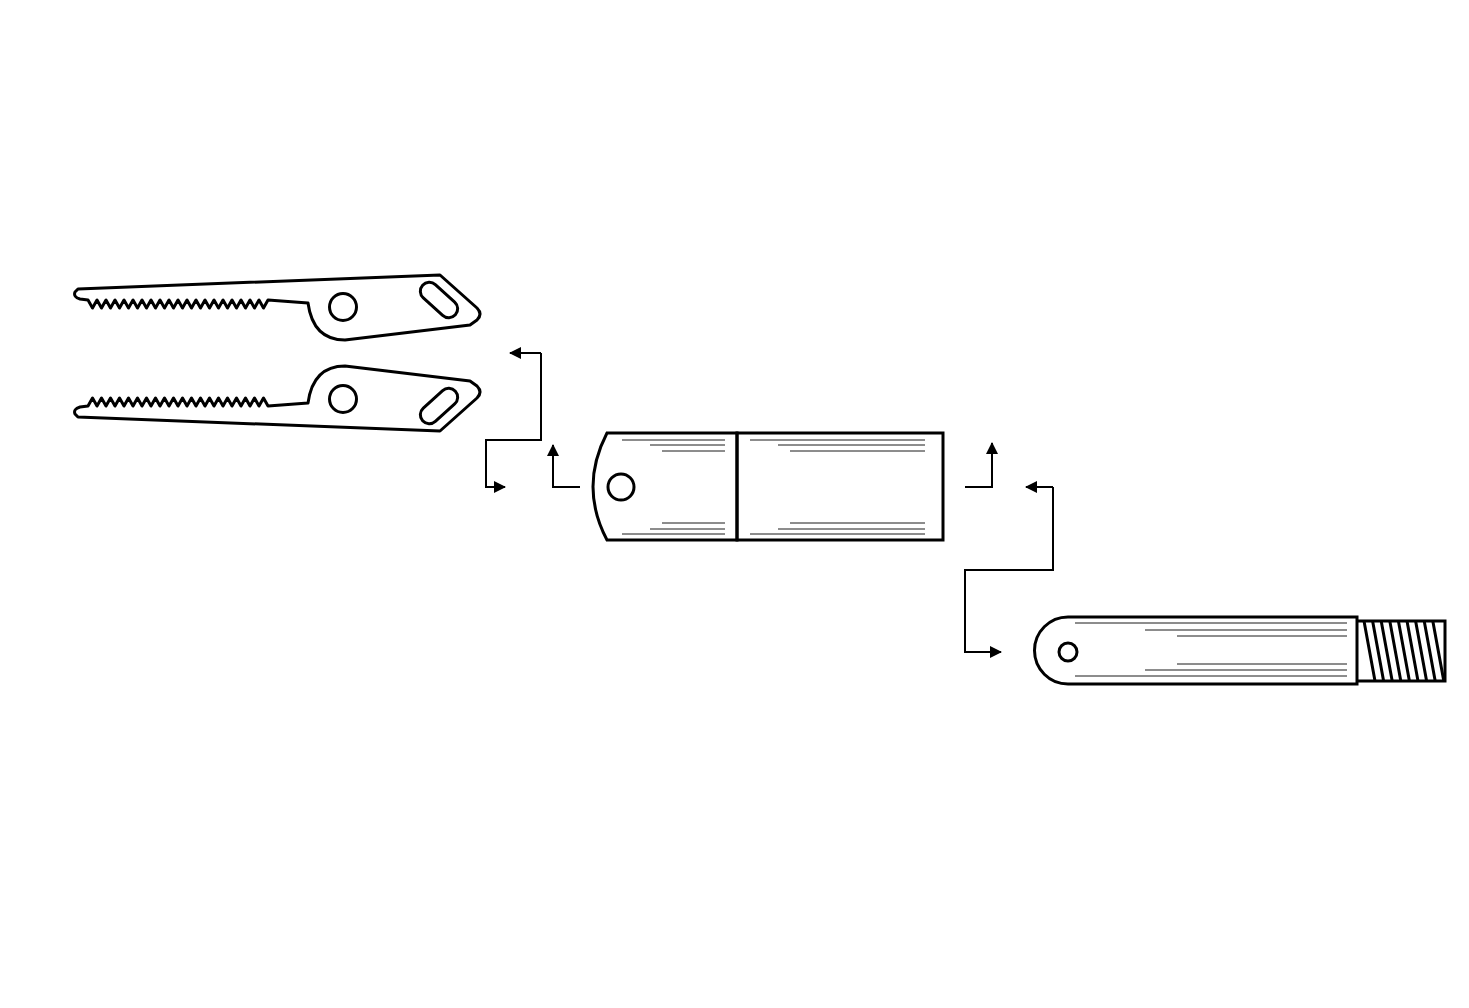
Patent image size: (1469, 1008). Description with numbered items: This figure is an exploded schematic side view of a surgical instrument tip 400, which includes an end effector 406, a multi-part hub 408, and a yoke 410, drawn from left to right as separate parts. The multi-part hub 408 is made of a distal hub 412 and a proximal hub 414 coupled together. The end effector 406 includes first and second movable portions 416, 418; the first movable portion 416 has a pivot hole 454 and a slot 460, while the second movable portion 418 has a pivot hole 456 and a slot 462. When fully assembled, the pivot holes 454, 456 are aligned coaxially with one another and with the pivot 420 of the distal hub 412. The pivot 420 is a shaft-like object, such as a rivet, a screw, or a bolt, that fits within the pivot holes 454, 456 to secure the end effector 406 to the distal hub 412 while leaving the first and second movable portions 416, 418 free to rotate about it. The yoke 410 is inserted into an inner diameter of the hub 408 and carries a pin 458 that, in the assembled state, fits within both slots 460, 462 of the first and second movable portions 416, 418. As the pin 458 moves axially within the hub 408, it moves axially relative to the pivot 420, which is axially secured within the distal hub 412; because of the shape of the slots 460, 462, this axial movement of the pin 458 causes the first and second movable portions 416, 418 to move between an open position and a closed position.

The surgical instrument tip 400 is at (207, 104).
The end effector 406 is at (191, 530).
The multi-part hub 408 is at (760, 310).
The yoke 410 is at (1265, 617).
The distal hub 412 is at (670, 432).
The proximal hub 414 is at (805, 432).
The first movable portion 416 is at (277, 273).
The second movable portion 418 is at (286, 433).
The pivot 420 is at (621, 500).
The pivot hole 454 is at (342, 292).
The pivot hole 456 is at (343, 414).
The pin 458 is at (1068, 661).
The slot 460 is at (451, 284).
The slot 462 is at (432, 425).